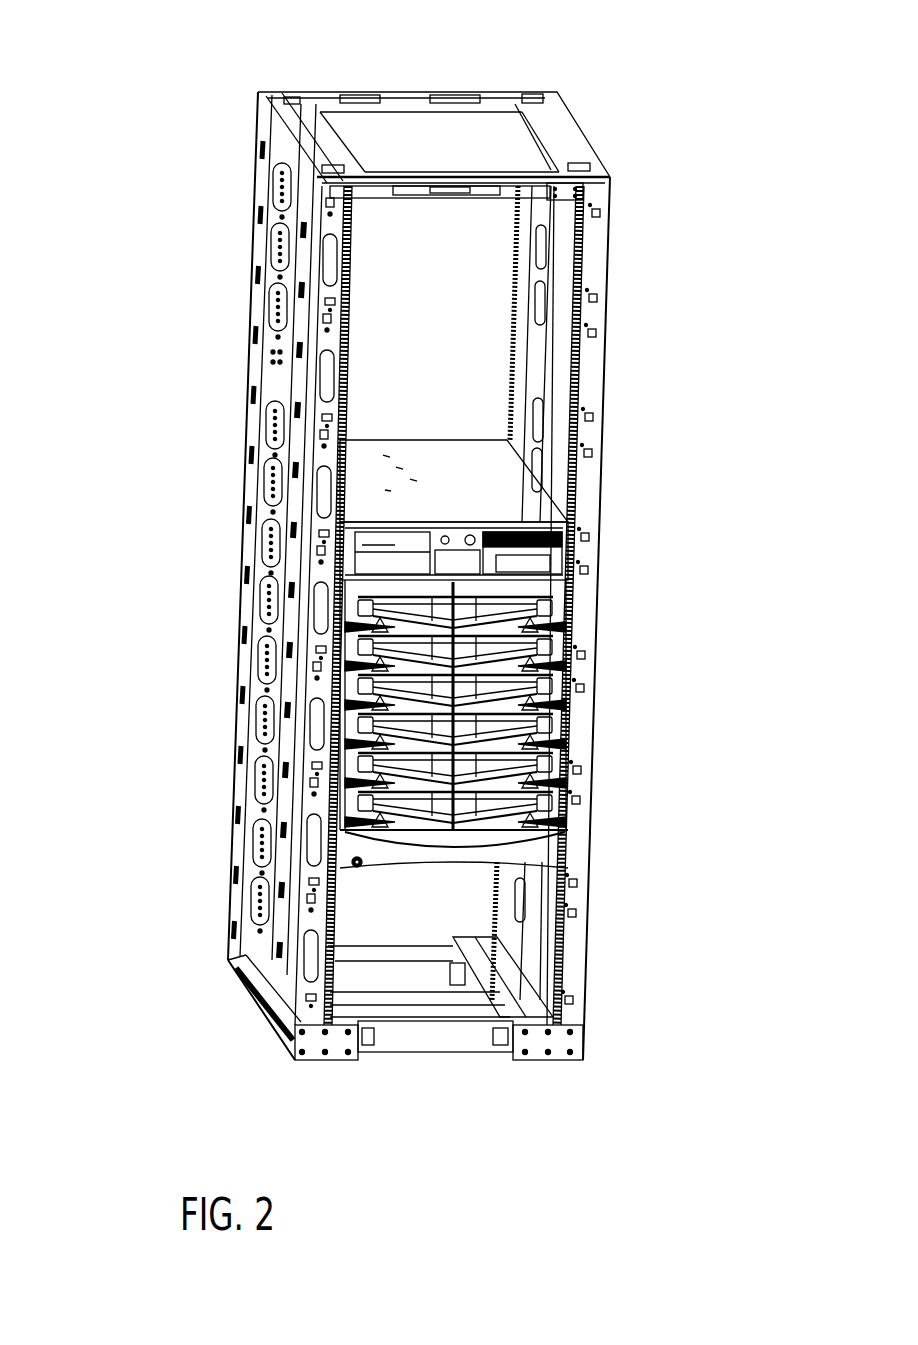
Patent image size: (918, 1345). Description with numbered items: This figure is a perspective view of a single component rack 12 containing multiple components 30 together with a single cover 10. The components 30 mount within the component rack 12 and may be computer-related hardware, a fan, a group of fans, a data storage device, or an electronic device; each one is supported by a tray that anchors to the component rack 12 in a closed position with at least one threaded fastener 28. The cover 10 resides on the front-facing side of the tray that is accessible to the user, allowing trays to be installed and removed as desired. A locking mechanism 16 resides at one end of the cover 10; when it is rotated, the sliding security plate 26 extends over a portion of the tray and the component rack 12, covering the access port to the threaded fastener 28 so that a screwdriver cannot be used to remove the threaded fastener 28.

The cover 10 is at (565, 853).
The component rack 12 is at (258, 160).
The locking mechanism 16 is at (357, 867).
The sliding security plate 26 is at (316, 845).
The threaded fastener 28 is at (567, 846).
The component 30 is at (563, 557).